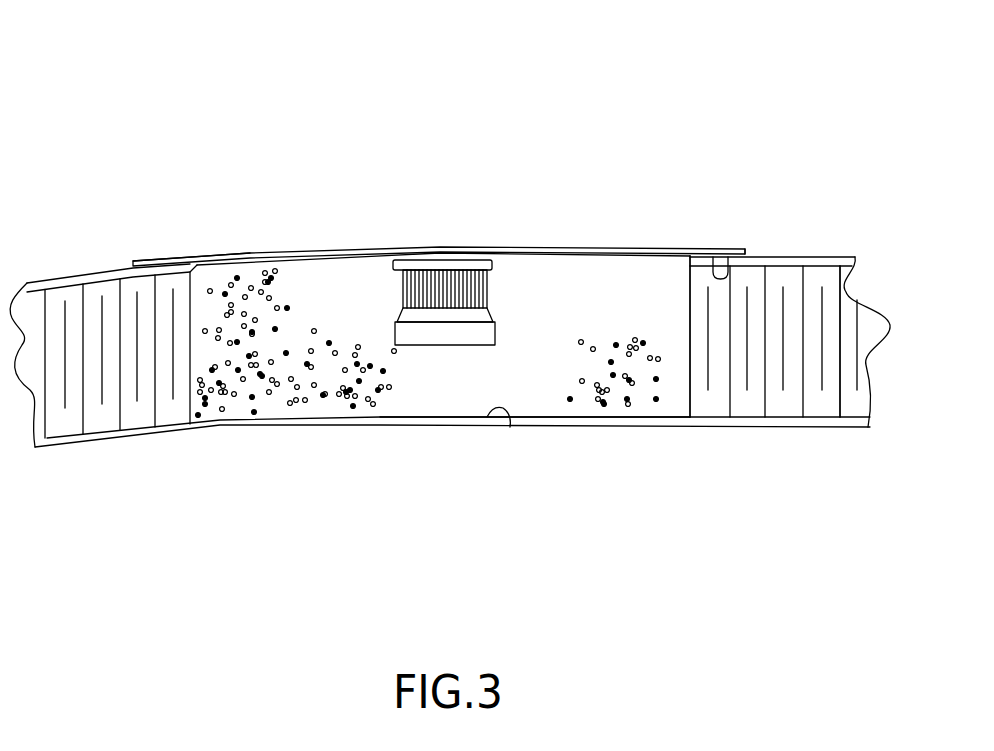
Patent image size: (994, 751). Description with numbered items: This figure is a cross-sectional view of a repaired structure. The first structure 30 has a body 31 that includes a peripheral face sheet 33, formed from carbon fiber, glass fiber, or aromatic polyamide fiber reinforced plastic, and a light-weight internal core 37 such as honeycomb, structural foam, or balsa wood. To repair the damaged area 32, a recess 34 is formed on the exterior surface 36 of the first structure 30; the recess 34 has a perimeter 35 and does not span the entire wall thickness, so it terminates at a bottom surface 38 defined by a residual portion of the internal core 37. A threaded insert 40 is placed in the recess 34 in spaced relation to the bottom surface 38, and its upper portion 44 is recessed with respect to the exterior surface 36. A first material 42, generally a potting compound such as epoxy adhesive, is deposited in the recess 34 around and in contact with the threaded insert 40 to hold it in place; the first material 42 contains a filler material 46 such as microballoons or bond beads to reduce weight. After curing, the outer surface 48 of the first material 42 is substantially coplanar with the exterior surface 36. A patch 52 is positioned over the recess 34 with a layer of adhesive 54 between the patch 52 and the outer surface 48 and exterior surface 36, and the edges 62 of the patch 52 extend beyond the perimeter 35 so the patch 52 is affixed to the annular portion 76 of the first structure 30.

The first structure 30 is at (664, 118).
The body 31 is at (120, 443).
The damaged area 32 is at (653, 407).
The peripheral face sheet 33 is at (840, 257).
The recess 34 is at (427, 403).
The perimeter 35 is at (208, 262).
The exterior surface 36 is at (50, 272).
The internal core 37 is at (833, 332).
The bottom surface 38 is at (510, 427).
The threaded insert 40 is at (474, 266).
The first material 42 is at (600, 302).
The upper portion 44 is at (430, 258).
The filler material 46 is at (296, 322).
The outer surface 48 is at (680, 248).
The patch 52 is at (578, 247).
The adhesive 54 is at (723, 277).
The edges 62 is at (133, 259).
The annular portion 76 is at (745, 268).